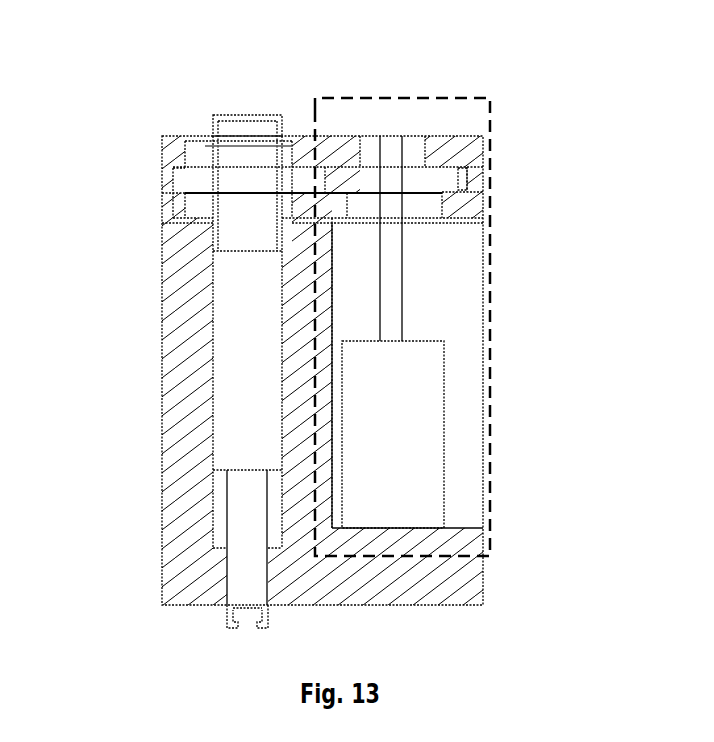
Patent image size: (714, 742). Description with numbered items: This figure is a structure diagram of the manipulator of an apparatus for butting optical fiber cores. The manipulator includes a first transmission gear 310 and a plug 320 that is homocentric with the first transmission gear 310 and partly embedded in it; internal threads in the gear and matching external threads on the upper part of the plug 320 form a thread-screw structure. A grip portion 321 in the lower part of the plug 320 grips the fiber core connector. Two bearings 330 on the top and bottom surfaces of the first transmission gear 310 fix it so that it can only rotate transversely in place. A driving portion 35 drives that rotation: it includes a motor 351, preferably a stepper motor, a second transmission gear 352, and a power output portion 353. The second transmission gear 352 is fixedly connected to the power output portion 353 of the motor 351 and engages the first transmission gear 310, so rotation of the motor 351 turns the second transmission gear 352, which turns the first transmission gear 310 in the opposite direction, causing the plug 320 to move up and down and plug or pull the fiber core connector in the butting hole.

The driving portion 35 is at (488, 107).
The first transmission gear 310 is at (175, 181).
The plug 320 is at (237, 303).
The grip portion 321 is at (228, 618).
The bearings 330 is at (192, 148).
The motor 351 is at (398, 448).
The second transmission gear 352 is at (433, 180).
The power output portion 353 is at (390, 288).